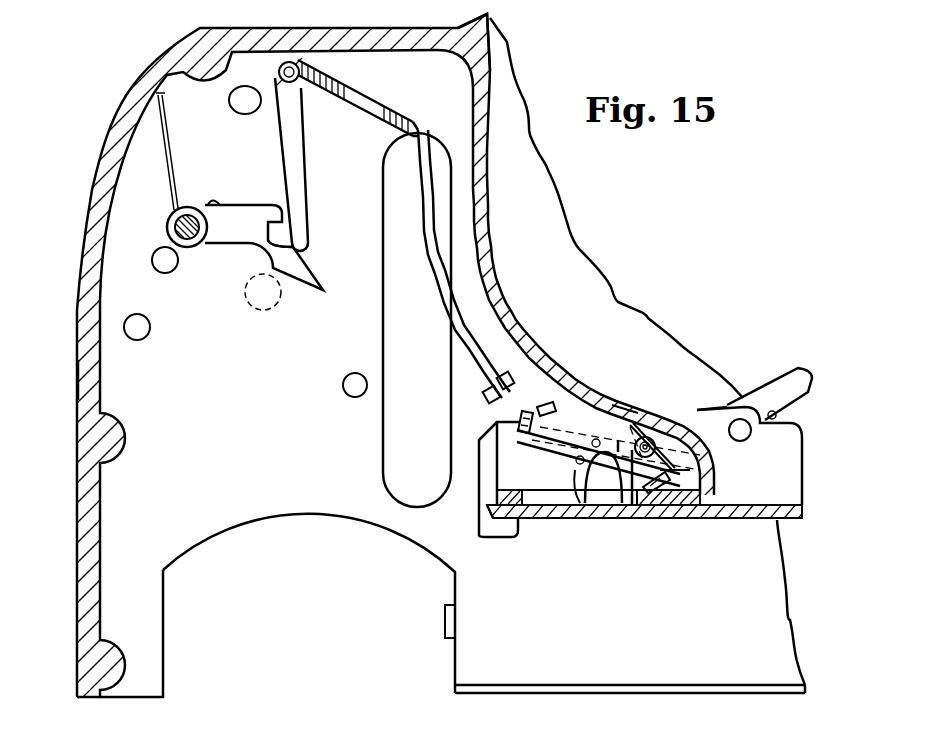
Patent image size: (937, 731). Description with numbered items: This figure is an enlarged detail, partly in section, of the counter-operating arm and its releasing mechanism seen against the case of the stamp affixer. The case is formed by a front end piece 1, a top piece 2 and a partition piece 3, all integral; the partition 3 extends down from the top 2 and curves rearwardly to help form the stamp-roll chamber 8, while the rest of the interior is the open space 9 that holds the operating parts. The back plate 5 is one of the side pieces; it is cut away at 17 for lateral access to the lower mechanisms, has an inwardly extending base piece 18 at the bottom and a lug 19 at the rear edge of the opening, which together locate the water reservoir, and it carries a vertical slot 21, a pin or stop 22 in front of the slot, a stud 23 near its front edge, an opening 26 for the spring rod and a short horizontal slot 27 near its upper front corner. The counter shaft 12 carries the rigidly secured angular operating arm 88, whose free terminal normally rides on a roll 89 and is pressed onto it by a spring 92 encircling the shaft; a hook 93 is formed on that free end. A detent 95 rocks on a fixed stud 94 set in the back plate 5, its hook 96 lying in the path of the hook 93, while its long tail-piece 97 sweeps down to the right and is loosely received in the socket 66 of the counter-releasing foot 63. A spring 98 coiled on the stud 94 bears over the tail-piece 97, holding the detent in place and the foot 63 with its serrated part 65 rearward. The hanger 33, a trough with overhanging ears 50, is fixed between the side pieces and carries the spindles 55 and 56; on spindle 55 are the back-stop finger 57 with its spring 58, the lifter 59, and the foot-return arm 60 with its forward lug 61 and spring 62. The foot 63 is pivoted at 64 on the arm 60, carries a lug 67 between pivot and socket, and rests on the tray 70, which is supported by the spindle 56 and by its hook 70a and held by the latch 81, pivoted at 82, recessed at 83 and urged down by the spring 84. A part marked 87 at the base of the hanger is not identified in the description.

The front end piece 1 is at (85, 492).
The top piece 2 is at (470, 38).
The partition piece 3 is at (491, 259).
The back plate 5 is at (197, 441).
The stamp-roll chamber 8 is at (598, 284).
The open space 9 is at (110, 378).
The counter shaft 12 is at (167, 228).
The cut-away opening 17 is at (168, 573).
The base piece 18 is at (590, 688).
The lug 19 is at (446, 621).
The vertical slot 21 is at (386, 433).
The pin or stop 22 is at (343, 386).
The stud 23 is at (153, 262).
The opening 26 is at (150, 325).
The short horizontal slot 27 is at (229, 103).
The hanger 33 is at (683, 454).
The overhanging ears 50 is at (502, 528).
The spindle 55 is at (652, 438).
The spindle 56 is at (592, 477).
The back-stop finger 57 is at (570, 506).
The spring 58 is at (612, 403).
The lifter 59 is at (668, 497).
The counter-releasing foot-return arm 60 is at (540, 436).
The lug 61 is at (512, 417).
The spring 62 is at (675, 480).
The counter-releasing foot 63 is at (583, 506).
The pivot 64 is at (583, 444).
The serrated part 65 is at (618, 506).
The socket 66 is at (500, 375).
The lug 67 is at (558, 398).
The tray 70 is at (749, 456).
The hook 70a is at (700, 410).
The latch 81 is at (752, 396).
The pivot 82 is at (741, 441).
The recess 83 is at (657, 442).
The spring 84 is at (777, 415).
The plate end 87 is at (487, 509).
The angular operating arm 88 is at (228, 243).
The roll 89 is at (260, 311).
The spring 92 is at (175, 160).
The hook 93 is at (298, 238).
The fixed stud 94 is at (279, 73).
The detent 95 is at (293, 152).
The hook 96 is at (302, 254).
The tail-piece 97 is at (478, 336).
The spring 98 is at (320, 90).